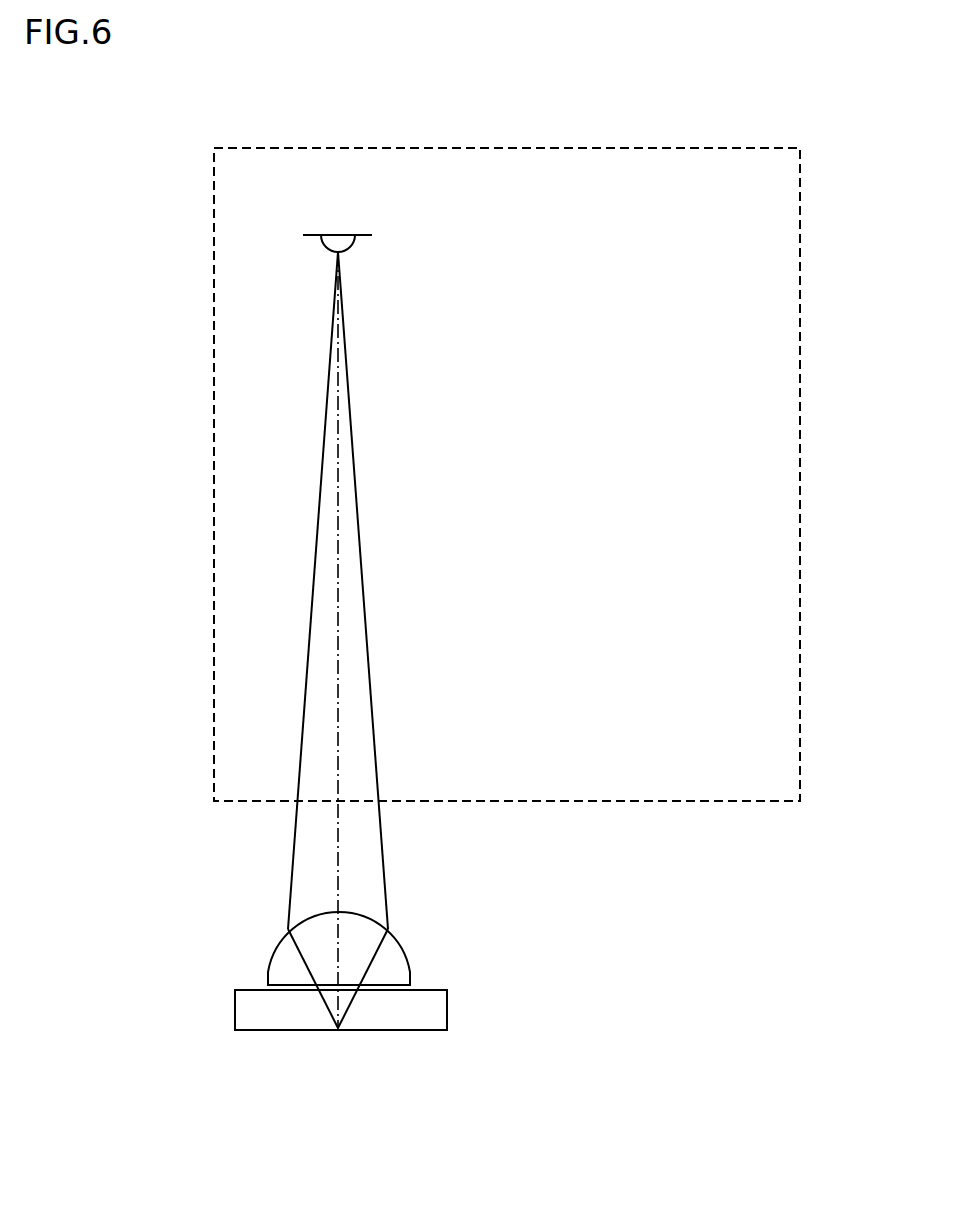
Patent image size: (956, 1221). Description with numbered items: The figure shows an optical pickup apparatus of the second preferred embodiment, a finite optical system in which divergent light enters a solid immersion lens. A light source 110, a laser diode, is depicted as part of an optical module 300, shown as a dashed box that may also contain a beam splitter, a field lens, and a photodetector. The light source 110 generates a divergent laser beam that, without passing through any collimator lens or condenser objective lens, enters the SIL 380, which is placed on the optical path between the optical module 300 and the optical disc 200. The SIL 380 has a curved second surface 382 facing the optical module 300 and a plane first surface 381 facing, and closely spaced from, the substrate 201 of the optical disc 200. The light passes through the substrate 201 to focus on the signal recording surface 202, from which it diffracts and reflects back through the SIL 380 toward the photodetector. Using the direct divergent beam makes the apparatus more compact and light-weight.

The light source 110 is at (345, 233).
The optical disc 200 is at (464, 1004).
The substrate 201 is at (235, 1010).
The signal recording surface 202 is at (258, 1032).
The optical module 300 is at (802, 248).
The SIL 380 is at (430, 950).
The first surface 381 is at (272, 952).
The second surface 382 is at (398, 934).